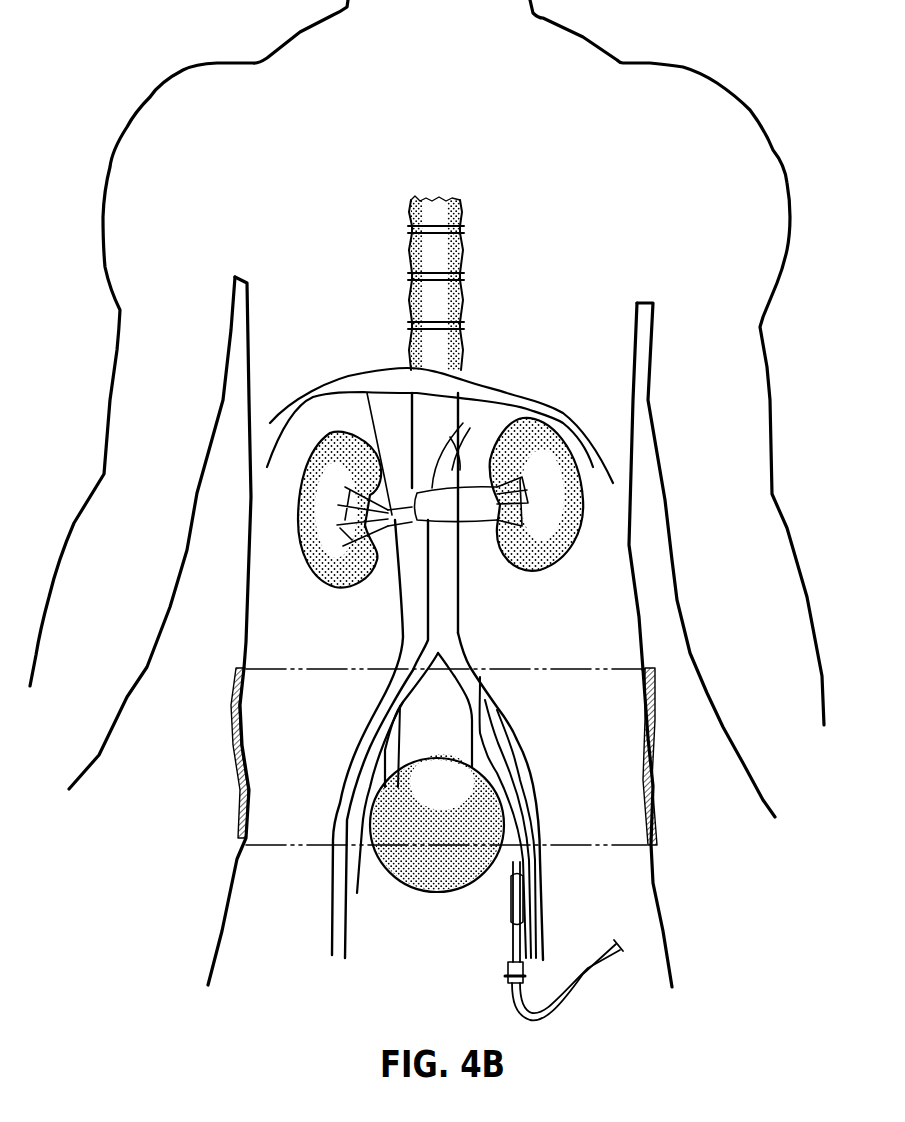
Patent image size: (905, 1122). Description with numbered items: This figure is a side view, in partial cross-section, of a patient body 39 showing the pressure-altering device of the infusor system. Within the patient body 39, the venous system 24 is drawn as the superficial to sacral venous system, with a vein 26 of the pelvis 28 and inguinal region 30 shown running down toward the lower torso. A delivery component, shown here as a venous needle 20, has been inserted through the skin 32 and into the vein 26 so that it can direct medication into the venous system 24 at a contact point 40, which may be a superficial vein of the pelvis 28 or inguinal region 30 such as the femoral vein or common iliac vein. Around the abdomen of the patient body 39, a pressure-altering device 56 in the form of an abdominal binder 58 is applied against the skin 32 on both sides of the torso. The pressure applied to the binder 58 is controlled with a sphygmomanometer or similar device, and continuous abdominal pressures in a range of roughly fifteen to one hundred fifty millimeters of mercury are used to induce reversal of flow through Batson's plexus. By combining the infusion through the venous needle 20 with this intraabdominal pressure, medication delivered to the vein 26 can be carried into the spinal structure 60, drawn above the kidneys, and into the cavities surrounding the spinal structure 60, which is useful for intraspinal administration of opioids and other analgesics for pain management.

The venous needle 20 is at (511, 938).
The venous system 24 is at (455, 701).
The vein 26 is at (525, 874).
The pelvis 28 is at (302, 767).
The inguinal region 30 is at (404, 962).
The skin 32 is at (243, 655).
The patient body 39 is at (660, 871).
The contact point 40 is at (516, 878).
The pressure-altering device 56 is at (229, 717).
The abdominal binder 58 is at (654, 784).
The spinal structure 60 is at (395, 242).